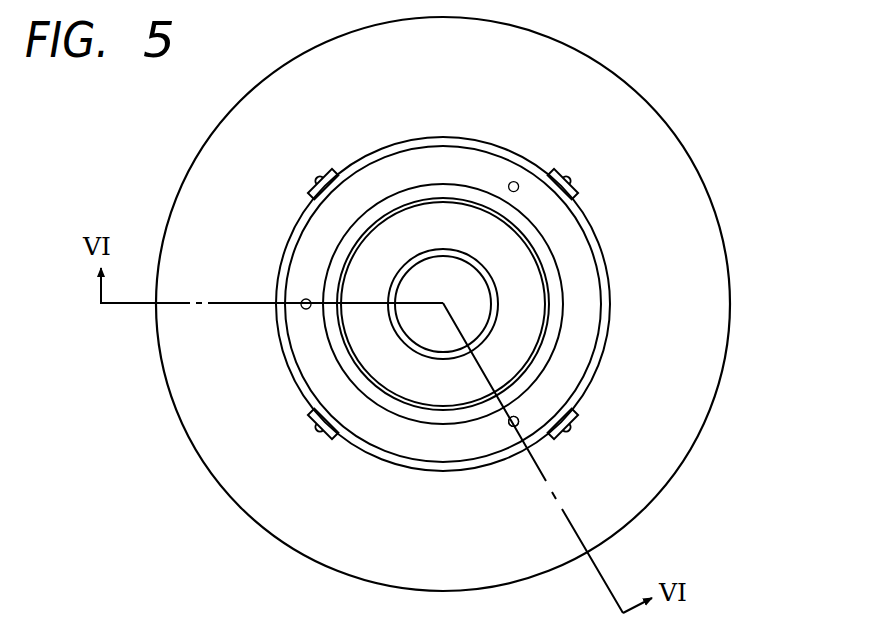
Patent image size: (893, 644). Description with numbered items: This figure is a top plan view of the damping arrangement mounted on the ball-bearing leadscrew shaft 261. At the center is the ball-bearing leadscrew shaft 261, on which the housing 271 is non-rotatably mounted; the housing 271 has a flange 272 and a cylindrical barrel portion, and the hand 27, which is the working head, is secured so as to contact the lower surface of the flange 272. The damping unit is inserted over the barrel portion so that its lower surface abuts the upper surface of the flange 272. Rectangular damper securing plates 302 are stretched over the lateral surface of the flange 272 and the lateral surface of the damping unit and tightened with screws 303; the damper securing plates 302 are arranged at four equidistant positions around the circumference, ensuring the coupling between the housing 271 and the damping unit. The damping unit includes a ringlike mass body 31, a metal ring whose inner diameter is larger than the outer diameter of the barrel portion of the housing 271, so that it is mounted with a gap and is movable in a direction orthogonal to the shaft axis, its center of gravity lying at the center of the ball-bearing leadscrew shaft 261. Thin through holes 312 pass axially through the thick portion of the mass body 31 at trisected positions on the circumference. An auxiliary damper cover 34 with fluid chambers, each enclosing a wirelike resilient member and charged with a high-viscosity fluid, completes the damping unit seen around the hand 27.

The hand 27 is at (717, 290).
The flange 272 is at (598, 256).
The mass body 31 is at (566, 232).
The through holes 312 is at (528, 415).
The auxiliary damper cover 34 is at (550, 347).
The housing 271 is at (472, 220).
The ball-bearing leadscrew shaft 261 is at (433, 350).
The damper securing plates 302 is at (335, 170).
The screws 303 is at (318, 179).